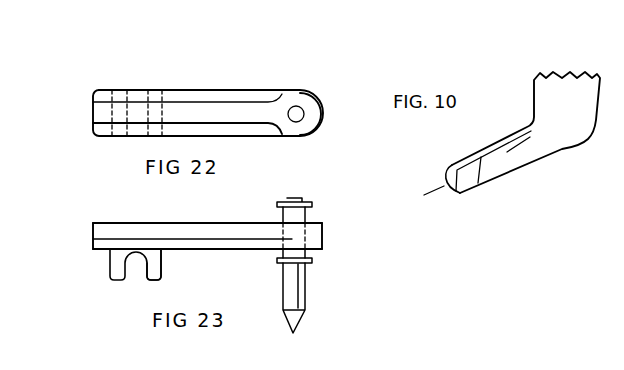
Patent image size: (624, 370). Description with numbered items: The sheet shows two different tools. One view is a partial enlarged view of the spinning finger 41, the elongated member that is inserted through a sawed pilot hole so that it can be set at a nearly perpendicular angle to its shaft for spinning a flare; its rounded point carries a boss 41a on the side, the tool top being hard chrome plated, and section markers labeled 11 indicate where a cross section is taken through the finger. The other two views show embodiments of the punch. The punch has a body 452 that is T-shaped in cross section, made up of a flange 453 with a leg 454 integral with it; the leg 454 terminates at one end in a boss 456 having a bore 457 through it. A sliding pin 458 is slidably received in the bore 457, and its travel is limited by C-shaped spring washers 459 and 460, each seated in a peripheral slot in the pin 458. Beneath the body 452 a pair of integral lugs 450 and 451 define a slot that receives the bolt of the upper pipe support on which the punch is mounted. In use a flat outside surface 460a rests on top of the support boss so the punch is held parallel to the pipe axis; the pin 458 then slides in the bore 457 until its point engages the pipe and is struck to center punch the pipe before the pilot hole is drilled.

In FIG. 10, the section line 11- 11 is at (516, 140).
In FIG. 10, the finger 41 is at (502, 168).
In FIG. 10, the boss 41a is at (463, 183).
In FIG. 23, the integral lug 450 is at (111, 282).
In FIG. 23, the integral lug 451 is at (163, 282).
In FIG. 22, the body 452 is at (275, 88).
In FIG. 22, the flange 453 is at (177, 110).
In FIG. 23, the flange 453 is at (240, 251).
In FIG. 22, the leg 454 is at (228, 90).
In FIG. 23, the leg 454 is at (218, 223).
In FIG. 22, the boss 456 is at (310, 96).
In FIG. 22, the bore 457 is at (302, 117).
In FIG. 23, the sliding pin 458 is at (300, 277).
In FIG. 23, the C-shaped spring washer 459 is at (307, 204).
In FIG. 23, the C-shaped spring washer 460 is at (310, 261).
In FIG. 23, the flat outside surface 460a is at (168, 250).